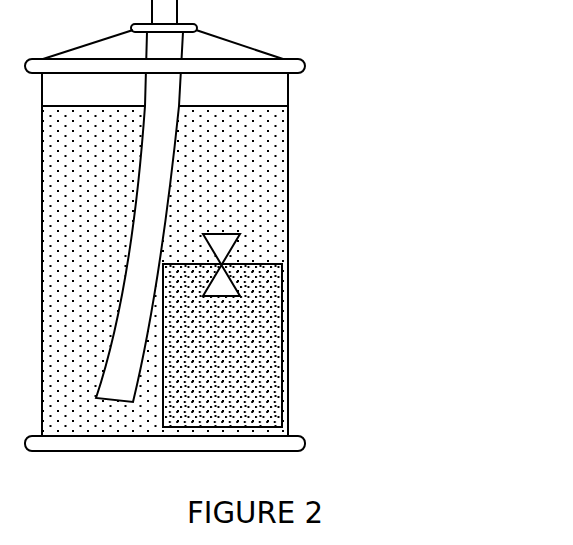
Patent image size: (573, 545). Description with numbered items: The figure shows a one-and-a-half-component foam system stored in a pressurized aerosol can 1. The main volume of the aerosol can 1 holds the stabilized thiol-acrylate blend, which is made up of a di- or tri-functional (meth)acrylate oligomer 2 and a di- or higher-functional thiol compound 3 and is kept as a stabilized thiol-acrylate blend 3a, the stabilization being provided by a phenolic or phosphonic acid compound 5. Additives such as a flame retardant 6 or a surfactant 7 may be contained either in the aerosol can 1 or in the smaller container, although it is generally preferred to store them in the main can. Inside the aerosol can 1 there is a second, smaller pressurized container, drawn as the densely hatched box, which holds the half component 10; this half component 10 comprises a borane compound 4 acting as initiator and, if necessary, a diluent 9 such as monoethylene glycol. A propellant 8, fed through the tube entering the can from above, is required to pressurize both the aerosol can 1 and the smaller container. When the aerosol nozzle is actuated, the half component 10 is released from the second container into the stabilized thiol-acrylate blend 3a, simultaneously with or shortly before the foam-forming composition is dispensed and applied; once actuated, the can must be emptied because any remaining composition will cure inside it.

The aerosol can 1 is at (288, 205).
The di- or tri-functional (meth)acrylate oligomer 2 is at (278, 262).
The di- or higher-functional thiol compound 3 is at (278, 262).
The stabilized thiol-acrylate blend 3a is at (278, 262).
The phenolic or phosphonic acid compound 5 is at (278, 262).
The flame retardant 6 is at (278, 262).
The surfactant 7 is at (217, 165).
The propellant 8 is at (212, 95).
The borane compound 4 is at (280, 330).
The diluent 9 is at (280, 330).
The half component 10 is at (273, 368).